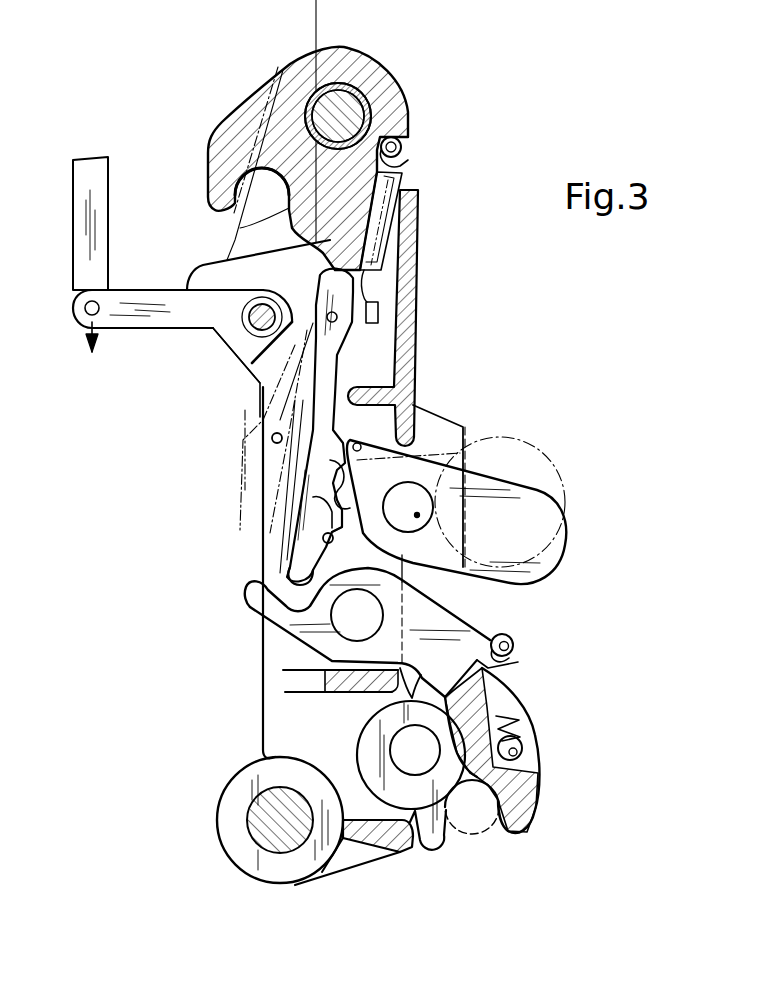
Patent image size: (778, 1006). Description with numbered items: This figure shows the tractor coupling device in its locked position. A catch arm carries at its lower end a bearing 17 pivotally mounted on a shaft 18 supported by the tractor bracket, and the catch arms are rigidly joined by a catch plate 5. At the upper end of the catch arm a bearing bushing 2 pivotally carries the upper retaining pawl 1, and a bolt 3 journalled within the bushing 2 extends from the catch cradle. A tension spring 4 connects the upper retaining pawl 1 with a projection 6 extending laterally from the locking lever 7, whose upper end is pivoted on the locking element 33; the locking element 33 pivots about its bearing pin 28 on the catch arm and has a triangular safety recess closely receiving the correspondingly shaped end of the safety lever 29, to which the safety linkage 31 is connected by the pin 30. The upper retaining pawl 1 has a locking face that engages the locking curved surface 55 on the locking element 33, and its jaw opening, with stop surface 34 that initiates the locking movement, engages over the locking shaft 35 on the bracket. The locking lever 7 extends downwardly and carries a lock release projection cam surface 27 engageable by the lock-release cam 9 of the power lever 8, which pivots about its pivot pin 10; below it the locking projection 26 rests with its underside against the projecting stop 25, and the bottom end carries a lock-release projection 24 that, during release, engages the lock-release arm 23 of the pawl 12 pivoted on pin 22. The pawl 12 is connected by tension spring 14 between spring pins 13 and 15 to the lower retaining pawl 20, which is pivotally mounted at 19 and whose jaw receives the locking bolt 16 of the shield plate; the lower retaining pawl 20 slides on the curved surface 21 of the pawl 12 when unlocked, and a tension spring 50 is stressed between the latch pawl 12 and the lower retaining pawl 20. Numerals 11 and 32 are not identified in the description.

The upper retaining pawl 1 is at (383, 79).
The bearing bushing 2 is at (352, 133).
The bolt 3 is at (375, 134).
The tension spring 4 is at (410, 152).
The catch plate 5 is at (404, 258).
The projection 6 is at (374, 318).
The locking lever 7 is at (327, 368).
The power lever 8 is at (517, 457).
The lock-release cam 9 is at (359, 448).
The pivot pin 10 is at (432, 494).
The pivot point 11 is at (418, 516).
The pawl 12 is at (430, 624).
The spring pin 13 is at (511, 640).
The tension spring 14 is at (513, 700).
The spring pin 15 is at (530, 750).
The locking bolt 16 is at (480, 807).
The bearing 17 is at (250, 780).
The shaft 18 is at (270, 820).
The pivot 19 is at (405, 763).
The lower retaining pawl 20 is at (373, 757).
The curved surface 21 is at (410, 702).
The pin 22 is at (347, 628).
The lock-release arm 23 is at (277, 595).
The lock-release projection 24 is at (300, 570).
The projecting stop 25 is at (333, 541).
The locking projection 26 is at (328, 516).
The lock release projection cam surface 27 is at (340, 450).
The bearing pin 28 is at (250, 316).
The safety lever 29 is at (247, 360).
The pin 30 is at (89, 314).
The safety linkage 31 is at (90, 258).
The bushing 32 is at (252, 337).
The locking element 33 is at (214, 278).
The stop surface 34 is at (280, 210).
The locking shaft 35 is at (255, 186).
The tension spring 50 is at (520, 664).
The locking curved surface 55 is at (366, 240).